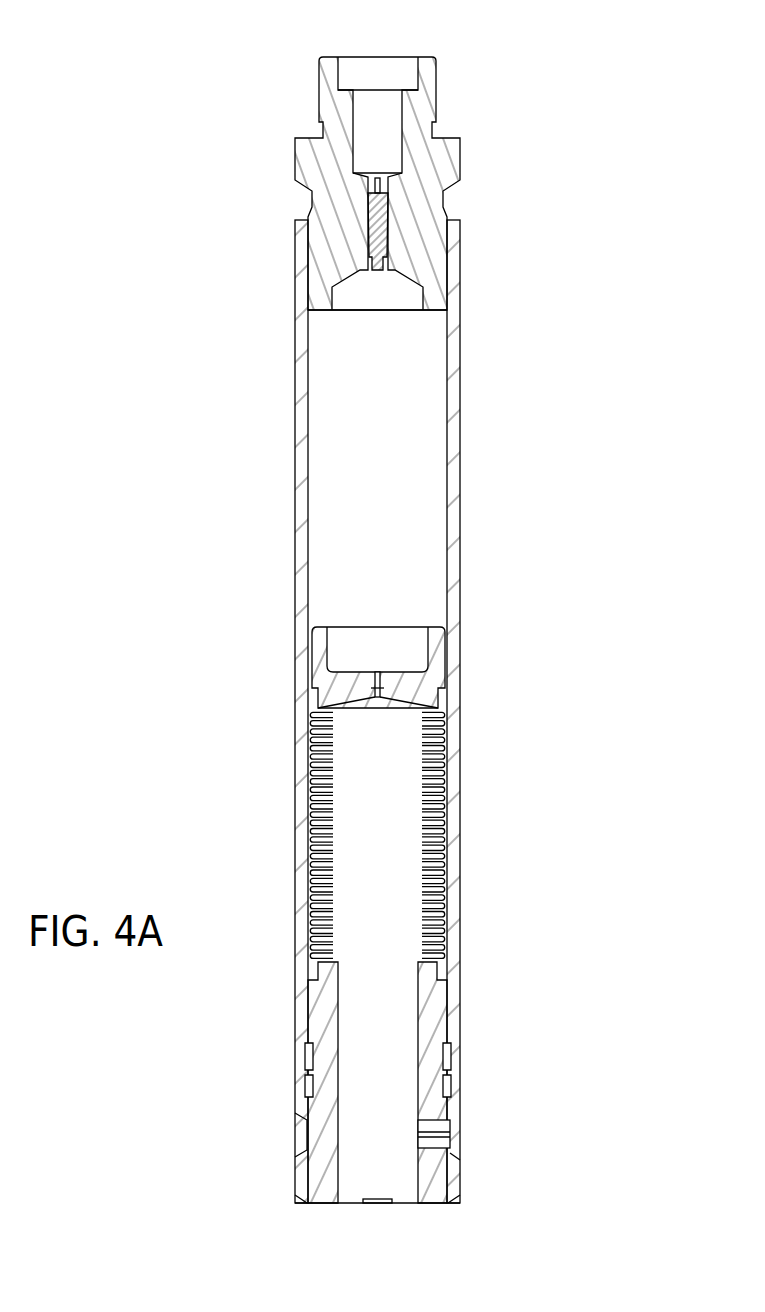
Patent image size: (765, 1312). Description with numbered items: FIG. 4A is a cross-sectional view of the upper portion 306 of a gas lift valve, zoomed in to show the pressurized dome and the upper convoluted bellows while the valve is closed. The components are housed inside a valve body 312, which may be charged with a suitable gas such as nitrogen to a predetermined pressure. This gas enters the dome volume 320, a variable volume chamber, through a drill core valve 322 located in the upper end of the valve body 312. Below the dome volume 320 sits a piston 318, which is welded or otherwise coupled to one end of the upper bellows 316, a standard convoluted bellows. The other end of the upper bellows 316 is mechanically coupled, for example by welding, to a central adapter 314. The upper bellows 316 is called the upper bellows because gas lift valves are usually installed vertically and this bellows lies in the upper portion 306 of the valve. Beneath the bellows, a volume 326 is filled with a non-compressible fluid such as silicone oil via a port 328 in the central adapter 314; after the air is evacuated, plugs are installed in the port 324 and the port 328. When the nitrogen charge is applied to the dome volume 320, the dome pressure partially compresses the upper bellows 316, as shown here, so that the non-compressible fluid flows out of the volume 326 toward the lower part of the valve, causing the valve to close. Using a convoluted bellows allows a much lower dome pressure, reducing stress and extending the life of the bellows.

The upper portion 306 is at (162, 116).
The valve body 312 is at (455, 458).
The central adapter 314 is at (435, 1052).
The upper bellows 316 is at (437, 783).
The piston 318 is at (433, 643).
The dome volume 320 is at (400, 572).
The drill core valve 322 is at (382, 227).
The port 324 is at (383, 682).
The volume 326 is at (380, 1003).
The port 328 is at (445, 1128).